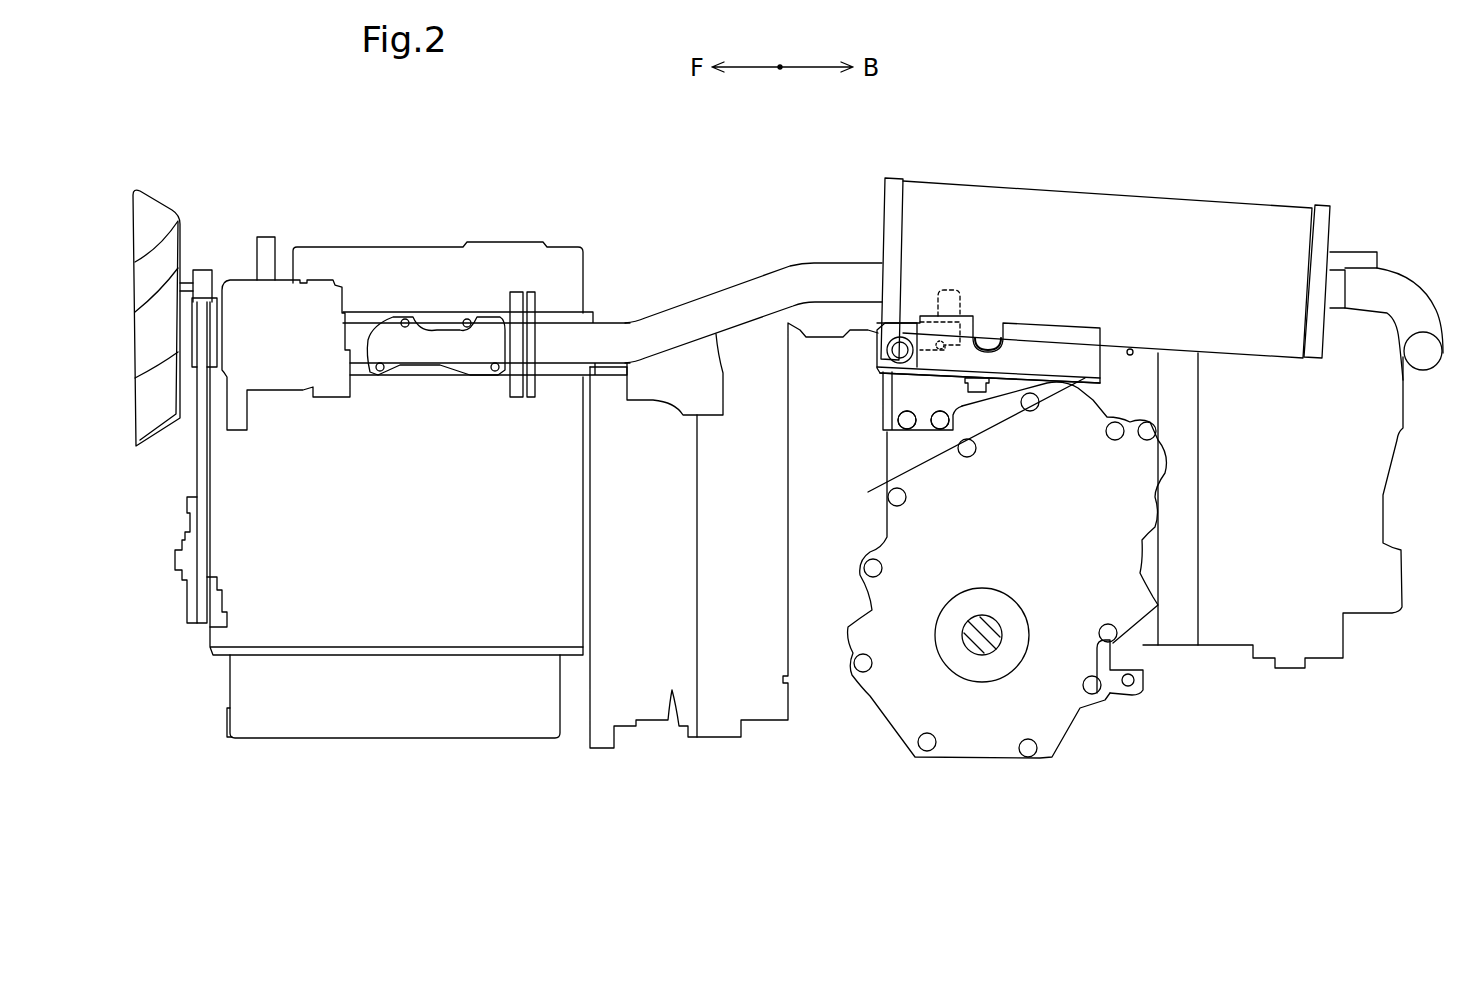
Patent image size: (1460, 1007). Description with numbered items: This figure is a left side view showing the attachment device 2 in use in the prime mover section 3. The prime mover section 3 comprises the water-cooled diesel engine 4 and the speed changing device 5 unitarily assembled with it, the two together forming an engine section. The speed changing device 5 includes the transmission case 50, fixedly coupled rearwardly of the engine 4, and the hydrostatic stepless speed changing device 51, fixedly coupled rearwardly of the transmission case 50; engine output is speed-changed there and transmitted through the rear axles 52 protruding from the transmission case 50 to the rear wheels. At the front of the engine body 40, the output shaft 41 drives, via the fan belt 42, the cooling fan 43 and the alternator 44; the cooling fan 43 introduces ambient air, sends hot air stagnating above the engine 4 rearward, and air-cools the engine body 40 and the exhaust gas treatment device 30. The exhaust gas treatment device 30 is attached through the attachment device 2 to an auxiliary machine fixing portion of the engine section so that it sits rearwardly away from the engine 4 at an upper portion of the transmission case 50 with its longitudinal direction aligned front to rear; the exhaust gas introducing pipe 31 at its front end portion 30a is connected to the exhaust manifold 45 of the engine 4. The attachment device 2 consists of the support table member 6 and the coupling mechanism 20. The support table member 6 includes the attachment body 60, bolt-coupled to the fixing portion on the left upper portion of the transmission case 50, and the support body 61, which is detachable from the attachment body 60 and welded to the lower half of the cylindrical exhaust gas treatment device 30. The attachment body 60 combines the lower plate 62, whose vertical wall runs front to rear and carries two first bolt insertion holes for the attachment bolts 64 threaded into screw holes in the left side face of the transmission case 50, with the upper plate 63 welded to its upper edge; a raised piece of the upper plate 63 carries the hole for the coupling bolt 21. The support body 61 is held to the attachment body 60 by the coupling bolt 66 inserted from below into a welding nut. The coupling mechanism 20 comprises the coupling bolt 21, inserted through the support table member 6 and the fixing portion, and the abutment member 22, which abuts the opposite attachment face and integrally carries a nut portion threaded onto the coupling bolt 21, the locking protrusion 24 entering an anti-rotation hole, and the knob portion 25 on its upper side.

The attachment device 2 is at (937, 372).
The prime mover section 3 is at (194, 165).
The engine 4 is at (300, 758).
The speed changing device 5 is at (1160, 754).
The support table member 6 is at (1008, 490).
The coupling mechanism 20 is at (865, 329).
The coupling bolt 21 is at (892, 354).
The abutment member 22 is at (920, 318).
The locking protrusion 24 is at (982, 338).
The knob portion 25 is at (948, 300).
The exhaust gas treatment device 30 is at (1198, 188).
The front end portion 30a is at (893, 204).
The exhaust gas introducing pipe 31 is at (712, 300).
The engine body 40 is at (443, 731).
The output shaft 41 is at (180, 560).
The fan belt 42 is at (205, 471).
The cooling fan 43 is at (146, 430).
The alternator 44 is at (276, 382).
The exhaust manifold 45 is at (470, 360).
The transmission case 50 is at (845, 672).
The hydrostatic stepless speed changing device 51 is at (1230, 637).
The rear axles 52 is at (985, 652).
The attachment body 60 is at (1008, 394).
The support body 61 is at (1061, 354).
The lower plate 62 is at (892, 430).
The upper plate 63 is at (1027, 372).
The attachment bolts 64 is at (940, 432).
The coupling bolt 66 is at (978, 395).